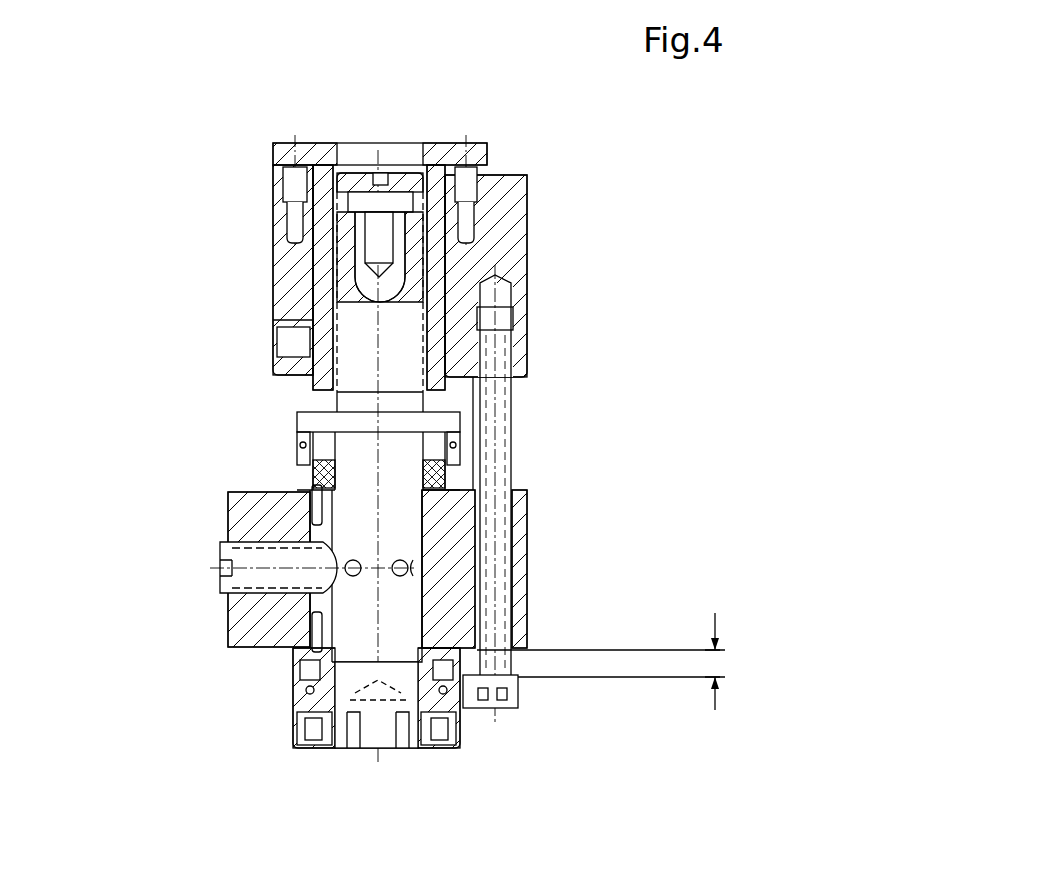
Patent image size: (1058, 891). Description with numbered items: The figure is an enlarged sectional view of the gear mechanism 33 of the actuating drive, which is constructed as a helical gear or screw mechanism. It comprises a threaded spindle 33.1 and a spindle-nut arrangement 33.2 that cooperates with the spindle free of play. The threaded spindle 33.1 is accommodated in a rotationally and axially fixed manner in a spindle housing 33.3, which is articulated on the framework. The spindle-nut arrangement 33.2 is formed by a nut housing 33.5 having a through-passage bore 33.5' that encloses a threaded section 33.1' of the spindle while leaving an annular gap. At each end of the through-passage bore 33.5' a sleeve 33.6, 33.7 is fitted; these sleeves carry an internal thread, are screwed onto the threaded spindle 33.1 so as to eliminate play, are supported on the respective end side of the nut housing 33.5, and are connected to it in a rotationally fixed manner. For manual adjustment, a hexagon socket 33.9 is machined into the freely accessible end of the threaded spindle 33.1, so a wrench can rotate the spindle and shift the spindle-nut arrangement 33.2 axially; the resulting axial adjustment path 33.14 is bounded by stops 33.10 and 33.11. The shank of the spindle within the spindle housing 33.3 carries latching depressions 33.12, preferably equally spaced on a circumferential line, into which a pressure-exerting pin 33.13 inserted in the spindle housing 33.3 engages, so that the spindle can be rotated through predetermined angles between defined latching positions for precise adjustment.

The gear mechanism 33 is at (235, 377).
The threaded spindle 33.1 is at (491, 576).
The threaded section 33.1' is at (289, 351).
The spindle-nut arrangement 33.2 is at (536, 392).
The spindle housing 33.3 is at (262, 635).
The nut housing 33.5 is at (548, 272).
The through-passage bore 33.5' is at (219, 270).
The sleeve 33.6 is at (430, 352).
The sleeve 33.7 is at (430, 270).
The hexagon socket 33.9 is at (353, 748).
The stop 33.10 is at (398, 146).
The stop 33.11 is at (518, 695).
The latching depressions 33.12 is at (400, 577).
The pressure-exerting pin 33.13 is at (268, 554).
The axial adjustment path 33.14 is at (720, 662).